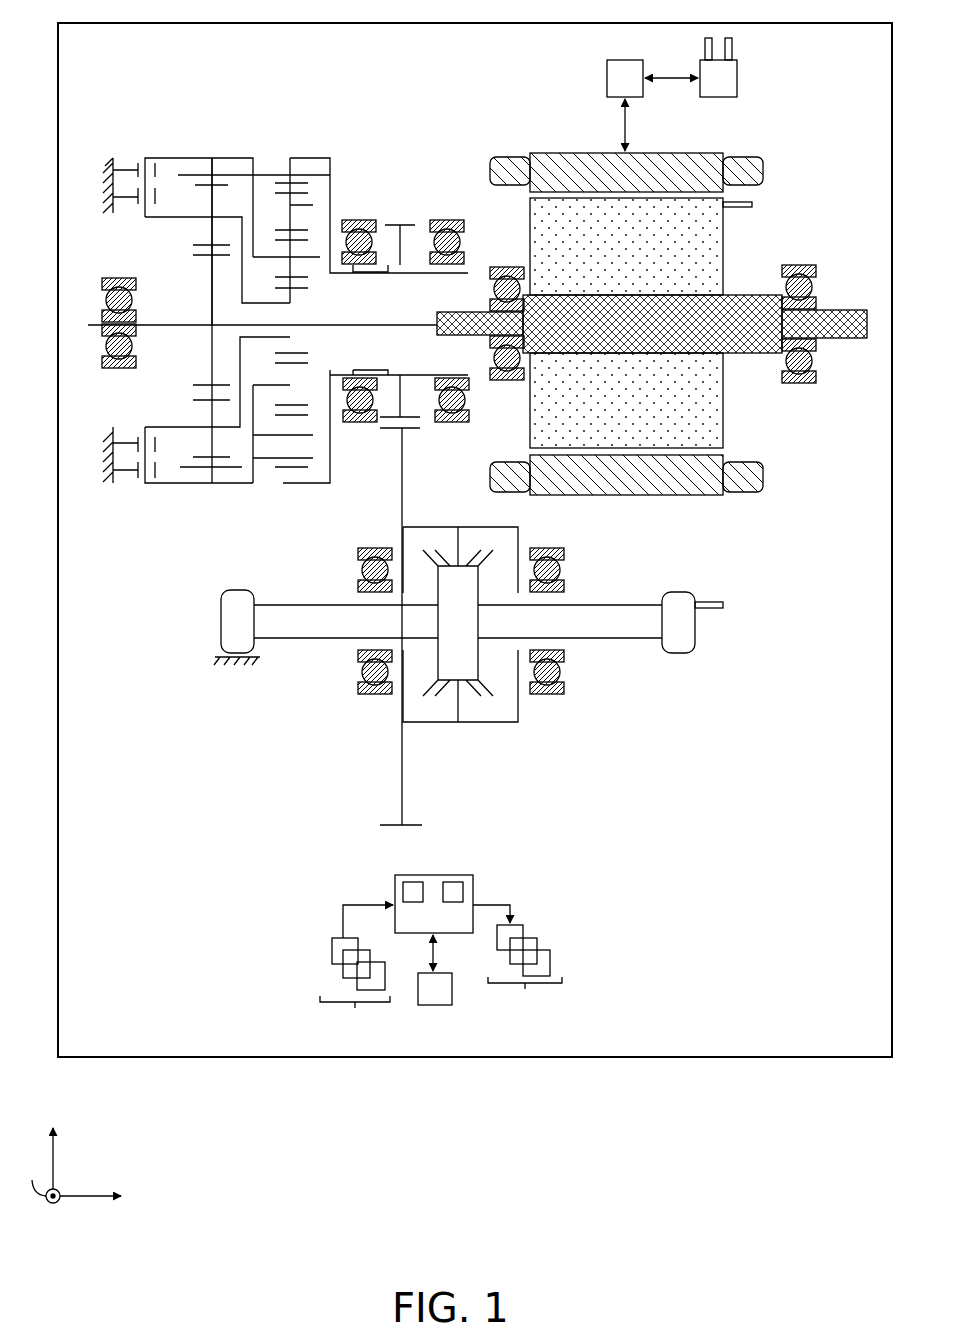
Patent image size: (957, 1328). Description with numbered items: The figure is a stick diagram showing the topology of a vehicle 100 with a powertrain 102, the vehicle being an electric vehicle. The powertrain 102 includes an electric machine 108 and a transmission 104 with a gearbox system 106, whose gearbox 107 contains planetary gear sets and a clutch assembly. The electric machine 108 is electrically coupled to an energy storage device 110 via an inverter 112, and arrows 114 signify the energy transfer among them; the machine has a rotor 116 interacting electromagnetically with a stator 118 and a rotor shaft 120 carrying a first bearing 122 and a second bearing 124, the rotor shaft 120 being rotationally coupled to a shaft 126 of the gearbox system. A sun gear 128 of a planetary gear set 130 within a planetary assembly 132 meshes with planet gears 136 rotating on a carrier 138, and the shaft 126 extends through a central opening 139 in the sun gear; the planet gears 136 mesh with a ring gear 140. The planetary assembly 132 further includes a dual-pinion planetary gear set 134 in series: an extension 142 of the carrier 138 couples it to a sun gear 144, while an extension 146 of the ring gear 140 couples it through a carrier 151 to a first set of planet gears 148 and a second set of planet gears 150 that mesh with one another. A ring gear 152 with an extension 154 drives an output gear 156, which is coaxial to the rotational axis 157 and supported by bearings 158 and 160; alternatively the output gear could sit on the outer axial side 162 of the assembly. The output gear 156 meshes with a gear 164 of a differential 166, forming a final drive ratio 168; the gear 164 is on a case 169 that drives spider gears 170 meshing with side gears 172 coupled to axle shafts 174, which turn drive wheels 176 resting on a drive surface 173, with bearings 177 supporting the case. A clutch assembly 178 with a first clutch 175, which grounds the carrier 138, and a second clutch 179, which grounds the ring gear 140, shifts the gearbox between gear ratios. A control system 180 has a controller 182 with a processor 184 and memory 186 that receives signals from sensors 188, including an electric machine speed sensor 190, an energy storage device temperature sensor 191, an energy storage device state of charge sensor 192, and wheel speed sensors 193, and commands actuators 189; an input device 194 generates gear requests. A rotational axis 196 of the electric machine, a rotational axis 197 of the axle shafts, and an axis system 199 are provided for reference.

The vehicle 100 is at (70, 24).
The powertrain 102 is at (100, 72).
The transmission 104 is at (100, 118).
The gearbox system 106 is at (170, 128).
The gearbox 107 is at (202, 78).
The electric machine 108 is at (638, 293).
The energy storage device 110 is at (737, 78).
The inverter 112 is at (607, 77).
The arrows 114 is at (668, 112).
The rotor 116 is at (723, 230).
The stator 118 is at (710, 152).
The rotor shaft 120 is at (475, 312).
The first bearing 122 is at (798, 265).
The second bearing 124 is at (505, 267).
The shaft 126 is at (418, 324).
The sun gear 128 is at (210, 280).
The planetary gear set 130 is at (212, 140).
The planetary assembly 132 is at (260, 98).
The dual-pinion planetary gear set 134 is at (290, 152).
The planet gears 136 is at (210, 231).
The carrier 138 is at (210, 218).
The central opening 139 is at (300, 318).
The ring gear 140 is at (190, 466).
The extension 142 is at (236, 428).
The sun gear 144 is at (302, 350).
The extension 146 is at (255, 483).
The first set of planet gears 148 is at (295, 374).
The second set of planet gears 150 is at (300, 198).
The carrier 151 is at (270, 384).
The ring gear 152 is at (268, 160).
The extension 154 is at (330, 160).
The output gear 156 is at (408, 225).
The rotational axis 157 is at (404, 323).
The bearing 158 is at (362, 422).
The bearing 160 is at (455, 422).
The outer axial side 162 is at (92, 283).
The gear 164 is at (392, 435).
The differential 166 is at (535, 540).
The final drive ratio 168 is at (370, 502).
The case 169 is at (422, 527).
The spider gears 170 is at (442, 565).
The side gears 172 is at (490, 560).
The drive surface 173 is at (222, 655).
The axle shafts 174 is at (312, 604).
The first clutch 175 is at (132, 212).
The drive wheels 176 is at (236, 590).
The bearings 177 is at (368, 695).
The clutch assembly 178 is at (97, 170).
The second clutch 179 is at (125, 152).
The control system 180 is at (467, 945).
The controller 182 is at (401, 875).
The processor 184 is at (402, 893).
The memory 186 is at (463, 893).
The sensors 188 is at (356, 971).
The actuators 189 is at (517, 961).
The electric machine speed sensor 190 is at (752, 205).
The energy storage device temperature sensor 191 is at (732, 46).
The energy storage device state of charge sensor 192 is at (705, 46).
The wheel speed sensors 193 is at (723, 605).
The input device 194 is at (437, 1005).
The rotational axis 196 is at (640, 323).
The rotational axis 197 is at (594, 622).
The axis system 199 is at (110, 1158).